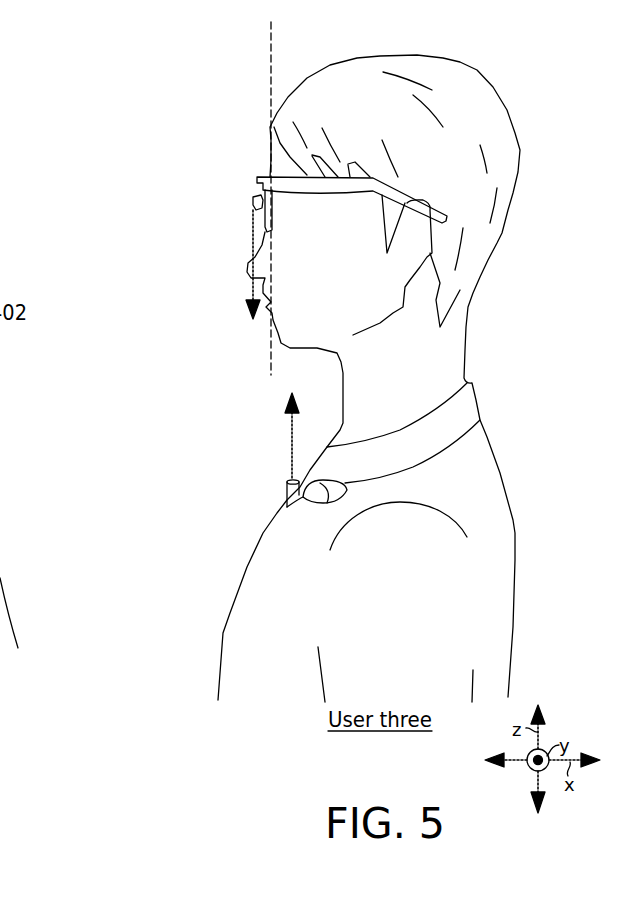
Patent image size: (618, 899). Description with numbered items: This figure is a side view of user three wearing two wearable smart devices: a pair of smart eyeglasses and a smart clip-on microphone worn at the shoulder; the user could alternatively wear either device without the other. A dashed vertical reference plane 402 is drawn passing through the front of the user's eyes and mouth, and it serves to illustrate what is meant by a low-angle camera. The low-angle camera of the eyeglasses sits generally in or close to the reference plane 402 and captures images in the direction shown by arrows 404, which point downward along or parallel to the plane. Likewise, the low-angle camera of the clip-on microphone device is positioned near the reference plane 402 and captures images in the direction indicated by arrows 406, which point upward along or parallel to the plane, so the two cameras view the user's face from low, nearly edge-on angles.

The reference plane 402 is at (272, 40).
The arrows 404 is at (252, 290).
The arrows 406 is at (290, 418).